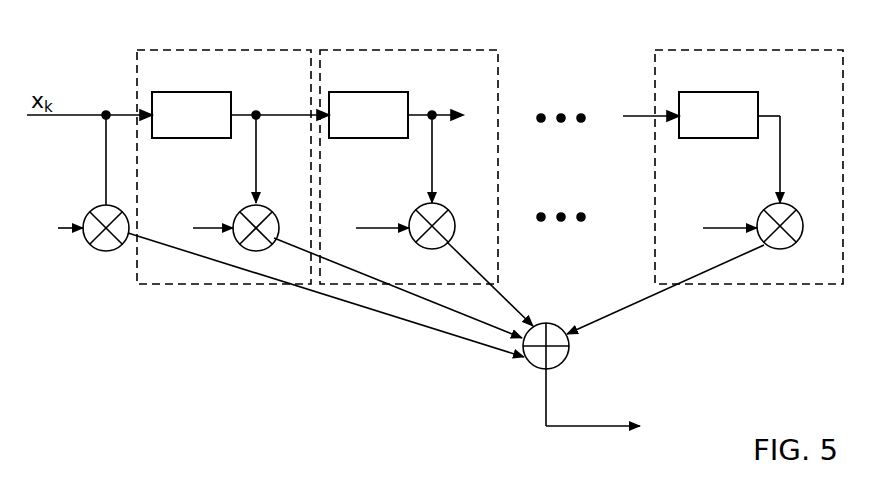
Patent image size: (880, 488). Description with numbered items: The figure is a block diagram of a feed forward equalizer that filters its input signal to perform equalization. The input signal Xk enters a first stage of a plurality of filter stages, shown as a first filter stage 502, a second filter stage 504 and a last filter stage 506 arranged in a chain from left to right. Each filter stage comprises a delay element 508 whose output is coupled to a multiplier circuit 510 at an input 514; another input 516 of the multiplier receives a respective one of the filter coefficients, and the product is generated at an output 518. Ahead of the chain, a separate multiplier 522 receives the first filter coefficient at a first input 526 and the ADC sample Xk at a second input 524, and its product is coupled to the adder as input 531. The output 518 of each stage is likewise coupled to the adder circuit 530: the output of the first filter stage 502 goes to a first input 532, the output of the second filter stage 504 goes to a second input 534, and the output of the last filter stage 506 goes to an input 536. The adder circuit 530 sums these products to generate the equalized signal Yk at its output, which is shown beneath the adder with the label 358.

The first filter stage 502 is at (262, 50).
The second filter stage 504 is at (435, 50).
The last filter stage 506 is at (773, 50).
The delay element 508 is at (195, 92).
The multiplier circuit 510 is at (272, 210).
The input 514 is at (258, 200).
The input 516 is at (230, 222).
The output 518 is at (270, 245).
The multiplier 522 is at (96, 250).
The second input 524 is at (100, 198).
The first input 526 is at (82, 220).
The adder circuit 530 is at (570, 355).
The input 531 is at (512, 362).
The first input 532 is at (515, 323).
The second input 534 is at (533, 320).
The input 536 is at (570, 325).
The filter output 358 is at (548, 372).